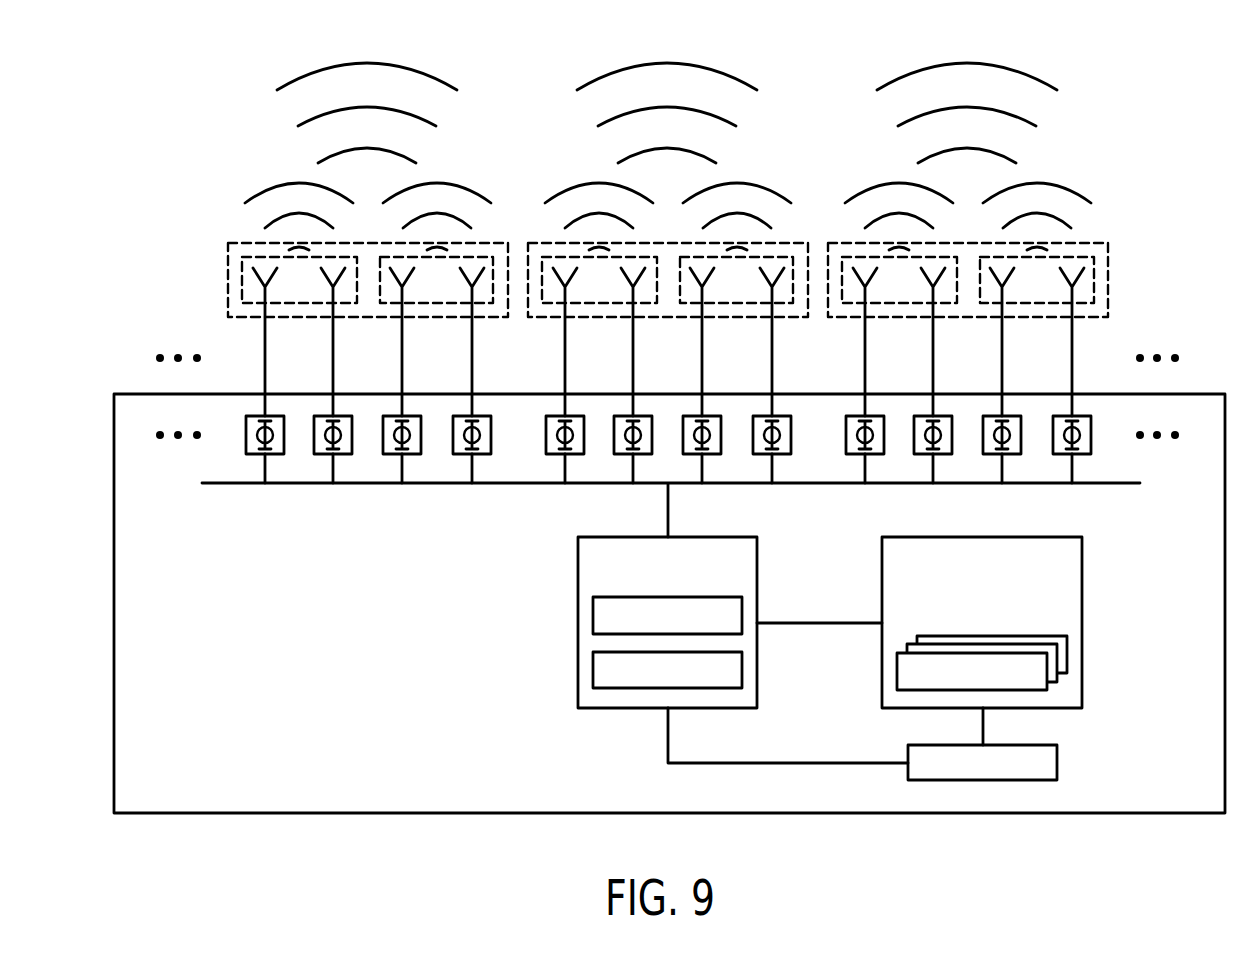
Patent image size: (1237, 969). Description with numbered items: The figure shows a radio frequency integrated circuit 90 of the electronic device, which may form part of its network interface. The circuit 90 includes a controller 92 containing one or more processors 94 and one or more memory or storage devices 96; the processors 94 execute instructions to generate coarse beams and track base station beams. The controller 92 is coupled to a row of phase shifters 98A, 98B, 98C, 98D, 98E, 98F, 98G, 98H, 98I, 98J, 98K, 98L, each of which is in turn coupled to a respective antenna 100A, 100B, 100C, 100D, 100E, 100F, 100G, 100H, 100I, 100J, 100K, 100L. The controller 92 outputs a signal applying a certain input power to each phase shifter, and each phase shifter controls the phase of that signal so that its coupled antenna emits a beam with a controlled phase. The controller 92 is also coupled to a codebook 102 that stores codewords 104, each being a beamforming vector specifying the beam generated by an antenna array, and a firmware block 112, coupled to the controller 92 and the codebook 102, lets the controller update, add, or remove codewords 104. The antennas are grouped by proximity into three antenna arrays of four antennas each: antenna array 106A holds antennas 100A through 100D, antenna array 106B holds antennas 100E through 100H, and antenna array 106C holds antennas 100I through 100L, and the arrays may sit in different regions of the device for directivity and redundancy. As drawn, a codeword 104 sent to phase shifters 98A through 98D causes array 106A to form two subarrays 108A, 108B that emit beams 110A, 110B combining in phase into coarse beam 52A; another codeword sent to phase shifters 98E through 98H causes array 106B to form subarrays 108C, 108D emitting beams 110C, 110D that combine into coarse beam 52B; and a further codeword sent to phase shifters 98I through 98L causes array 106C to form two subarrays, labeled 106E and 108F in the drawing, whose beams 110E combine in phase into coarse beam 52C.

The coarse beam 52A is at (367, 62).
The coarse beam 52B is at (667, 62).
The coarse beam 52C is at (967, 62).
The radio frequency integrated circuit 90 is at (392, 814).
The controller 92 is at (709, 650).
The processors 94 is at (593, 617).
The memory and/or storage devices 96 is at (593, 672).
The phase shifter 98A is at (275, 454).
The phase shifter 98B is at (343, 454).
The phase shifter 98C is at (412, 454).
The phase shifter 98D is at (482, 454).
The phase shifter 98E is at (555, 454).
The phase shifter 98F is at (623, 454).
The phase shifter 98G is at (712, 454).
The phase shifter 98H is at (782, 454).
The phase shifter 98I is at (875, 454).
The phase shifter 98J is at (943, 454).
The phase shifter 98K is at (1012, 454).
The phase shifter 98L is at (1082, 454).
The antenna 100A is at (265, 378).
The antenna 100B is at (333, 378).
The antenna 100C is at (402, 378).
The antenna 100D is at (472, 378).
The antenna 100E is at (565, 378).
The antenna 100F is at (633, 378).
The antenna 100G is at (702, 378).
The antenna 100H is at (772, 378).
The antenna 100I is at (865, 378).
The antenna 100J is at (933, 378).
The antenna 100K is at (1002, 378).
The antenna 100L is at (1072, 378).
The codebook 102 is at (980, 641).
The codeword 104 is at (897, 667).
The antenna array 106A is at (228, 262).
The antenna array 106B is at (547, 243).
The antenna array 106C is at (1108, 262).
The antenna sub-array 106E is at (957, 290).
The subarray 108A is at (242, 280).
The subarray 108B is at (380, 268).
The subarray 108C is at (657, 268).
The subarray 108D is at (793, 268).
The subarray 108F is at (1094, 282).
The beam 110A is at (299, 182).
The beam 110B is at (467, 187).
The beam 110C is at (570, 188).
The beam 110D is at (767, 188).
The beam 110E is at (870, 189).
The firmware 112 is at (1057, 762).